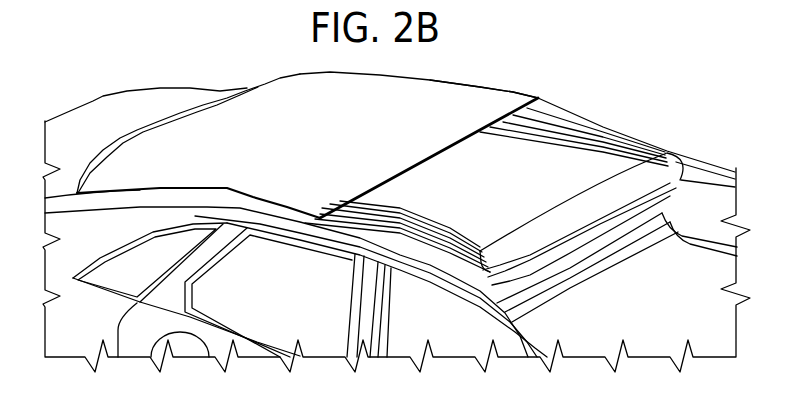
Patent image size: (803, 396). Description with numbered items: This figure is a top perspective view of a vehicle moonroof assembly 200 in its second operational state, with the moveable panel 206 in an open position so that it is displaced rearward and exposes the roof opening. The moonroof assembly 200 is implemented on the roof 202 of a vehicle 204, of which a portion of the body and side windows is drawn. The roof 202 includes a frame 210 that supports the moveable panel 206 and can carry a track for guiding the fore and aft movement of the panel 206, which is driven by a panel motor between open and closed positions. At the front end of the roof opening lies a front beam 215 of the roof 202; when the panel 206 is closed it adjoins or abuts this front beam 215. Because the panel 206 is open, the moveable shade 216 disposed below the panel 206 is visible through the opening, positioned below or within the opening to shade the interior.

The moonroof assembly 200 is at (648, 78).
The roof 202 is at (648, 132).
The vehicle 204 is at (196, 90).
The moveable panel 206 is at (500, 88).
The frame 210 is at (548, 172).
The front beam 215 is at (663, 163).
The moveable shade 216 is at (582, 137).